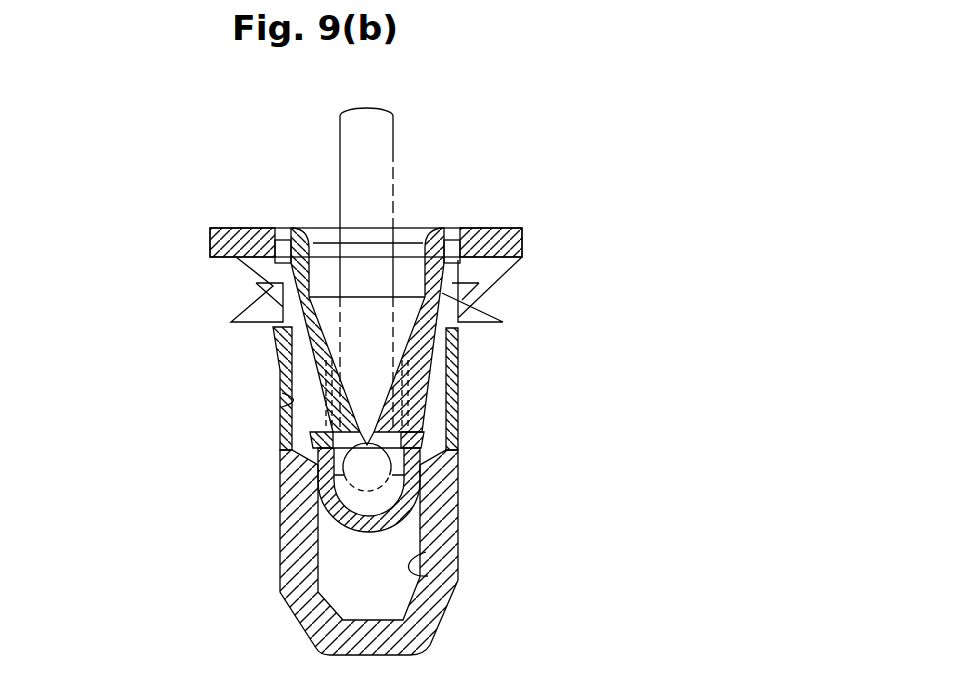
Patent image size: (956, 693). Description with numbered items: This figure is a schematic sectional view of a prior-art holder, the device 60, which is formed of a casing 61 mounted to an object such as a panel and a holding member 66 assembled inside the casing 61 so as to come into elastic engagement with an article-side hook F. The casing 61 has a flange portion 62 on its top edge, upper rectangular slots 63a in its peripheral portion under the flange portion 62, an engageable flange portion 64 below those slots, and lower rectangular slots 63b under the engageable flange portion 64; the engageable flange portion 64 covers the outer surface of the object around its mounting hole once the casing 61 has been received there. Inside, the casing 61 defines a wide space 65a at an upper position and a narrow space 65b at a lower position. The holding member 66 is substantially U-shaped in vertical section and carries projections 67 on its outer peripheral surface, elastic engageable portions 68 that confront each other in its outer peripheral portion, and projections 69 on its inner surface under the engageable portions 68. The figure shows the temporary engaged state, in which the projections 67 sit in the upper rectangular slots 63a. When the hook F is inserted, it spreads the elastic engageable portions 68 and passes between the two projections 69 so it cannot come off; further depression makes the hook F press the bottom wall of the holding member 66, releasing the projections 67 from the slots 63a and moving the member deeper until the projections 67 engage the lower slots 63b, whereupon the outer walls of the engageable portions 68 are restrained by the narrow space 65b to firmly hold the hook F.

The article-side hook F is at (396, 142).
The device (holder) 60 is at (264, 551).
The casing 61 is at (282, 558).
The flange portion 62 is at (523, 235).
The rectangular slots (upper) 63a is at (478, 275).
The rectangular slots (lower) 63b is at (450, 347).
The engageable flange portion 64 is at (500, 321).
The wide space 65a is at (281, 408).
The narrow space 65b is at (428, 576).
The holding member 66 is at (353, 534).
The projections (outer) 67 is at (268, 285).
The elastic engageable portions 68 is at (413, 428).
The projections (inner) 69 is at (343, 452).